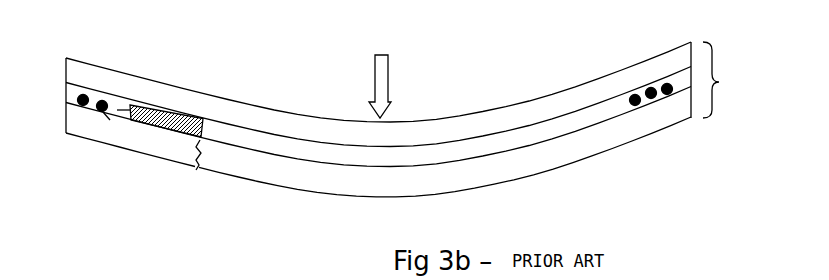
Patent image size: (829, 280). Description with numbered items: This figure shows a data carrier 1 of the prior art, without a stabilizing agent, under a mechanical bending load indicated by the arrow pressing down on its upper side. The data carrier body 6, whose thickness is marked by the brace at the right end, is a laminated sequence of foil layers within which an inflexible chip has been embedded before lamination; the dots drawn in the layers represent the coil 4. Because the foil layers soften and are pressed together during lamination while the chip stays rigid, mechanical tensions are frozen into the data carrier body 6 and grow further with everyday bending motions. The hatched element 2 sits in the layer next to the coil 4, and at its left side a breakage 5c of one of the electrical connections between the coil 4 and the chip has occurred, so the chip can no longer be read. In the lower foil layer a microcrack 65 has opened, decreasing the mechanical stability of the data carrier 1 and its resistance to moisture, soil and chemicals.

The data carrier 1 is at (407, 124).
The sensor element 2 is at (167, 112).
The coil 4 is at (80, 105).
The breakage 5c is at (115, 107).
The data carrier body 6 is at (720, 80).
The microcrack 65 is at (188, 167).